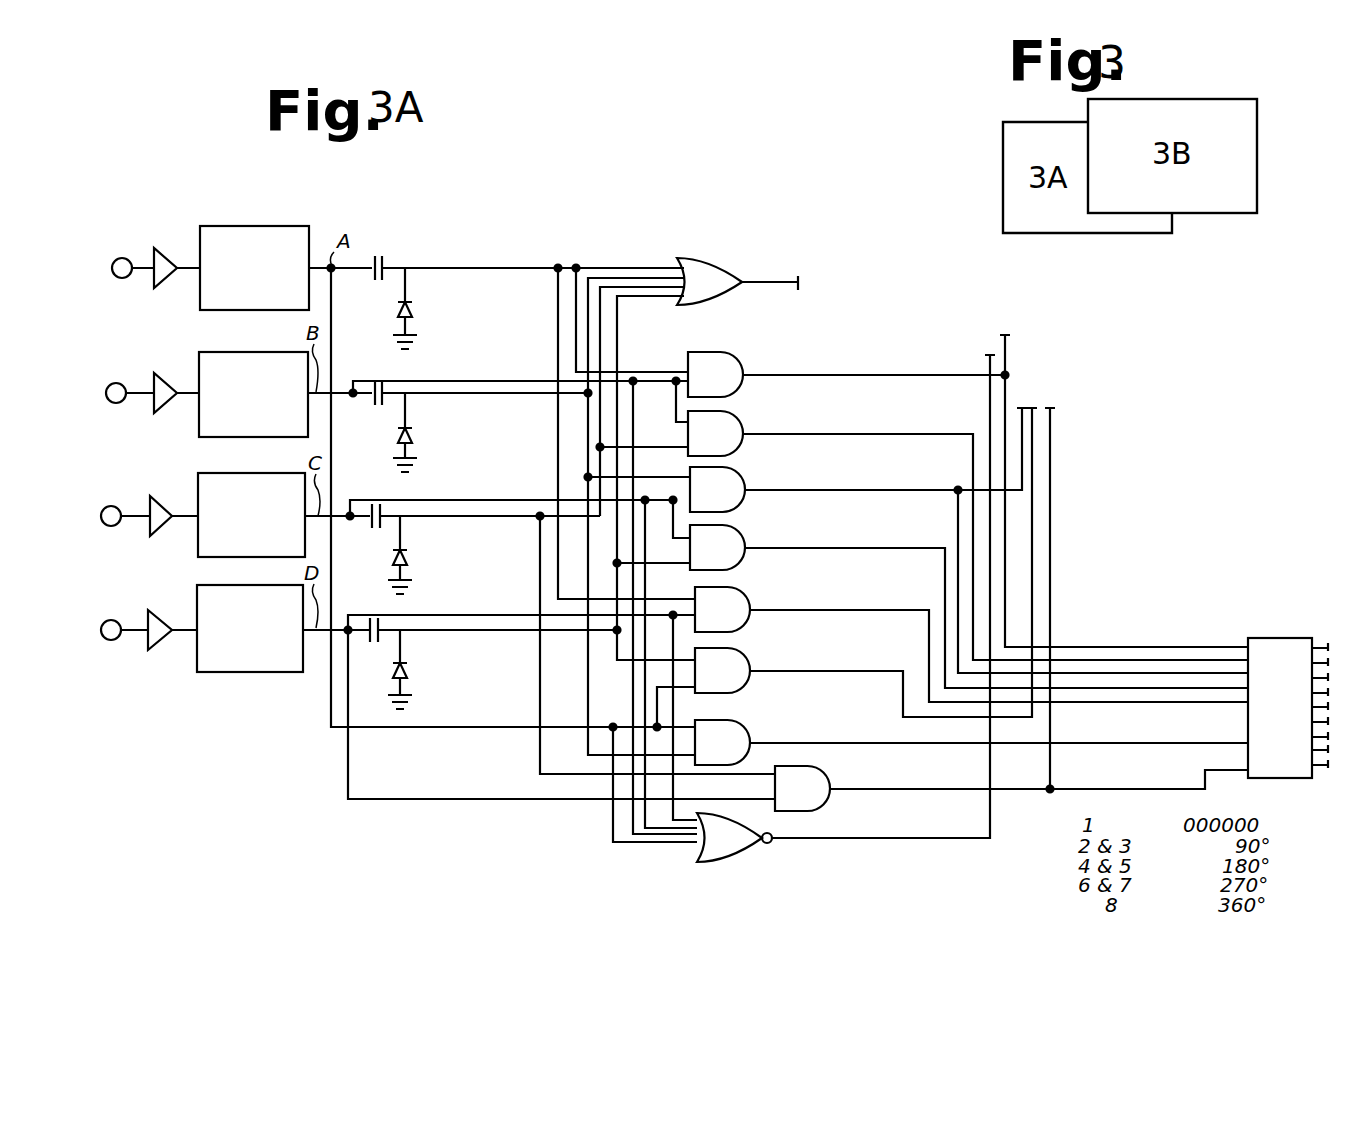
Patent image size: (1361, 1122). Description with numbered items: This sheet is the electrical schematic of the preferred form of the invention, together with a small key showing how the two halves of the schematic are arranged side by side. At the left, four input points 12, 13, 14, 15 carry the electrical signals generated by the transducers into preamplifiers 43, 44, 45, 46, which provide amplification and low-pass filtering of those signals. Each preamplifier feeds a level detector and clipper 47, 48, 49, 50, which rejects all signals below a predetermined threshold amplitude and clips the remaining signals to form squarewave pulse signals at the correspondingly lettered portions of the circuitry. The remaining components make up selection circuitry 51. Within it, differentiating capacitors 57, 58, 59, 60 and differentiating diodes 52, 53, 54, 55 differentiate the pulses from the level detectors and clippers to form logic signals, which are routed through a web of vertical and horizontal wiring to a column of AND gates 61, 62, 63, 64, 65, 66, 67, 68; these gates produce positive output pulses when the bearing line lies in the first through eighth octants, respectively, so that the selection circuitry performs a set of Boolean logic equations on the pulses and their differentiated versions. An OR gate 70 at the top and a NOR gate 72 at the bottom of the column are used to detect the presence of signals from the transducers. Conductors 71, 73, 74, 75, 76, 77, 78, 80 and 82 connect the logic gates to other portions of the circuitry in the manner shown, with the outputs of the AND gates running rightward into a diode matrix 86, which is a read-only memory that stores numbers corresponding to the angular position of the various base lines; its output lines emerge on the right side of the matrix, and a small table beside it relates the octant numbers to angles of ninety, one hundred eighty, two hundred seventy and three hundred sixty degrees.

The input terminal 12 is at (127, 262).
The input terminal 13 is at (104, 384).
The input terminal 14 is at (100, 506).
The input terminal 15 is at (100, 620).
The preamplifier 43 is at (172, 248).
The preamplifier 44 is at (170, 376).
The preamplifier 45 is at (164, 506).
The preamplifier 46 is at (162, 621).
The level detector and clipper 47 is at (282, 226).
The level detector and clipper 48 is at (244, 352).
The level detector and clipper 49 is at (250, 460).
The level detector and clipper 50 is at (254, 576).
The selection circuitry 51 is at (1145, 378).
The differentiating diode 52 is at (413, 308).
The differentiating diode 53 is at (412, 436).
The differentiating diode 54 is at (407, 552).
The differentiating diode 55 is at (407, 672).
The differentiating capacitor 57 is at (386, 263).
The differentiating capacitor 58 is at (376, 400).
The differentiating capacitor 59 is at (370, 532).
The differentiating capacitor 60 is at (382, 642).
The AND gate 61 is at (747, 655).
The AND gate 62 is at (747, 728).
The AND gate 63 is at (742, 353).
The AND gate 64 is at (748, 418).
The AND gate 65 is at (742, 476).
The AND gate 66 is at (742, 533).
The AND gate 67 is at (830, 778).
The AND gate 68 is at (748, 593).
The OR gate 70 is at (730, 264).
The conductor 71 is at (1032, 410).
The NOR gate 72 is at (739, 862).
The conductor 73 is at (1010, 340).
The conductor 74 is at (1194, 662).
The conductor 75 is at (1018, 410).
The conductor 76 is at (1199, 692).
The conductor 77 is at (1052, 450).
The conductor 78 is at (1213, 704).
The conductor 80 is at (788, 282).
The conductor 82 is at (986, 360).
The diode matrix 86 is at (1284, 638).